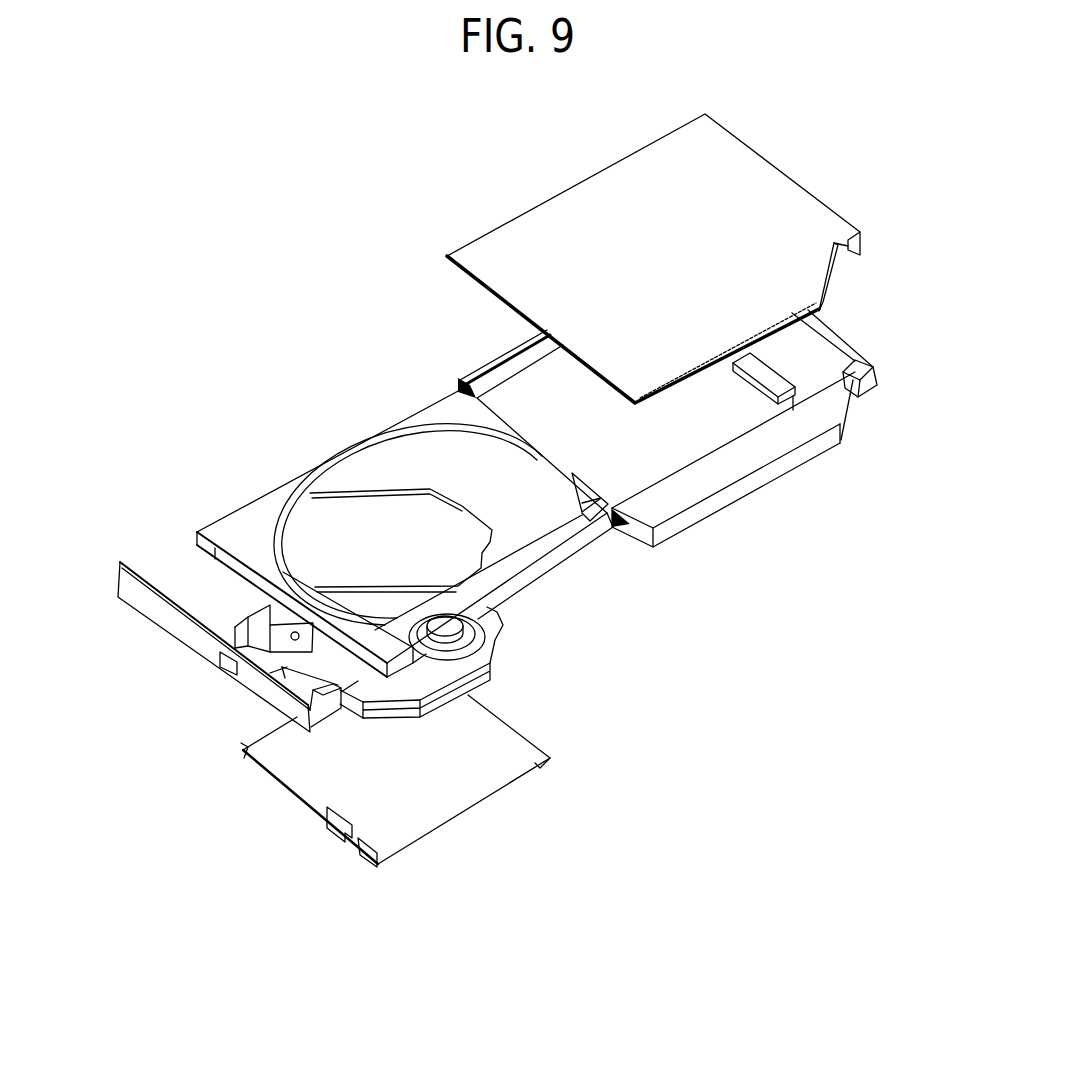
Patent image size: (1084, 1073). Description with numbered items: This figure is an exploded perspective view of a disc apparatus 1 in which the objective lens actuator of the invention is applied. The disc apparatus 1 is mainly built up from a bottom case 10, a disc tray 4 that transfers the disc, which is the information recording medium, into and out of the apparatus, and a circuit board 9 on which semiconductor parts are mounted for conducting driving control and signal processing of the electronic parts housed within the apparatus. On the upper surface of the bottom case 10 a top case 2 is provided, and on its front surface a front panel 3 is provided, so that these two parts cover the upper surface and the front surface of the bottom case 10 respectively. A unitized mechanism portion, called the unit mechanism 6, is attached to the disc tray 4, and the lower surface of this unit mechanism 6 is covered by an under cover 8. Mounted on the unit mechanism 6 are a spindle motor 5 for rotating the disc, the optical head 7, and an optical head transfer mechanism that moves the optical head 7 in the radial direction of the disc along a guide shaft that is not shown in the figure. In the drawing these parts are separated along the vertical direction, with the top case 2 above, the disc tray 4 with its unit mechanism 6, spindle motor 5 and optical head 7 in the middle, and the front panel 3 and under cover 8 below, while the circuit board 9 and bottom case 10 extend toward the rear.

The disc apparatus 1 is at (308, 266).
The top case 2 is at (785, 197).
The front panel 3 is at (176, 612).
The disc tray 4 is at (357, 448).
The spindle motor 5 is at (448, 625).
The unit mechanism 6 is at (477, 657).
The optical head 7 is at (270, 636).
The under cover 8 is at (453, 797).
The circuit board 9 is at (810, 353).
The bottom case 10 is at (732, 463).